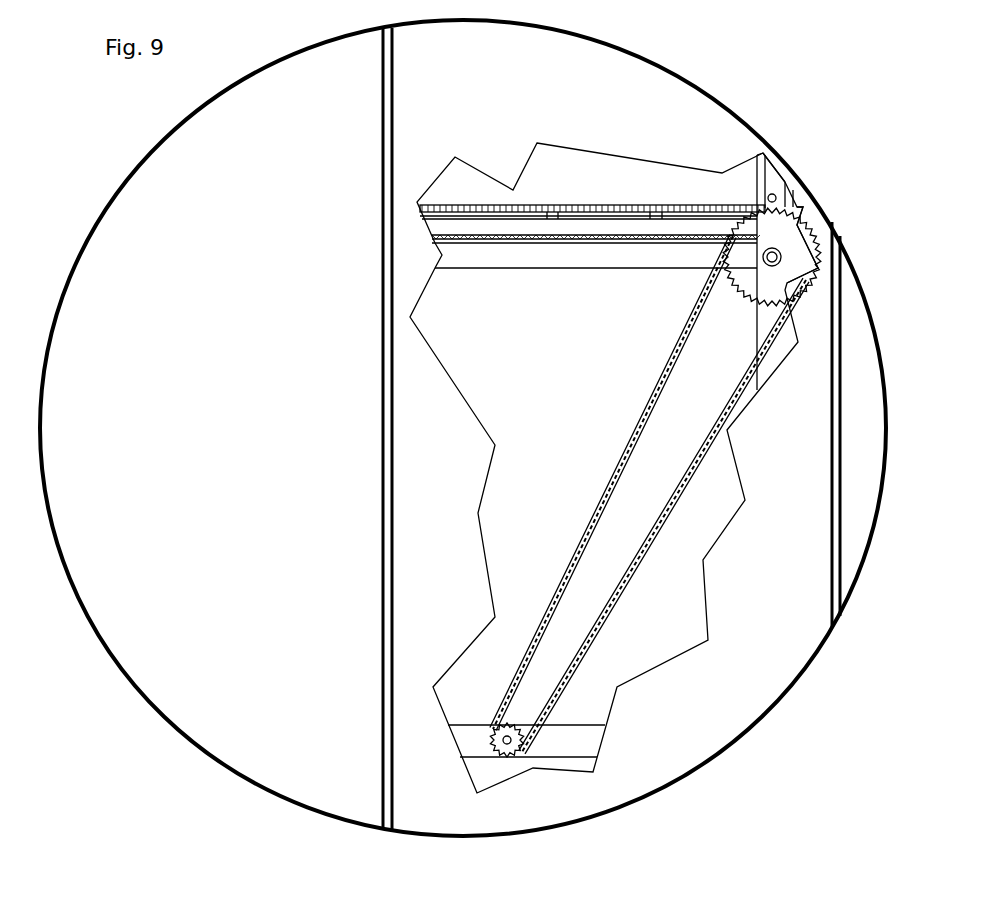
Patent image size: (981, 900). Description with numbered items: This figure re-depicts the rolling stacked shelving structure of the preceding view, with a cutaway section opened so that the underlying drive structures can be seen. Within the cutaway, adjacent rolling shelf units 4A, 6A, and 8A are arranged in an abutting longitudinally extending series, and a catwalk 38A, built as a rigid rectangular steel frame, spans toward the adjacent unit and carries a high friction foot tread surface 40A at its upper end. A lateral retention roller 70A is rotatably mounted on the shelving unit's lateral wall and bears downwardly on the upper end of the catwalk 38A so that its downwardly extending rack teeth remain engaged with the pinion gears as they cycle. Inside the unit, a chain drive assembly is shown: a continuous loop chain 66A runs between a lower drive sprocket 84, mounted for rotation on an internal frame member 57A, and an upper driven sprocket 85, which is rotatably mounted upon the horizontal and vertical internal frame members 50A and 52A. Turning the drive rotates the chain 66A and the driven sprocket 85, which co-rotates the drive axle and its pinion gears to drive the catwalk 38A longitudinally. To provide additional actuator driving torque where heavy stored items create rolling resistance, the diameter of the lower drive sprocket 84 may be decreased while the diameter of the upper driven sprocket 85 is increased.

The shelf unit 4A is at (152, 308).
The shelf unit 6A is at (720, 709).
The shelf unit 8A is at (858, 444).
The catwalk 38A is at (592, 228).
The foot tread surface 40A is at (560, 206).
The internal frame member 50A is at (538, 260).
The vertical interior frame component 52A is at (768, 173).
The internal frame member 57A is at (567, 747).
The continuous loop chain 66A is at (650, 393).
The retention roller 70A is at (752, 190).
The lower drive sprocket 84 is at (517, 738).
The upper driven sprocket 85 is at (798, 260).